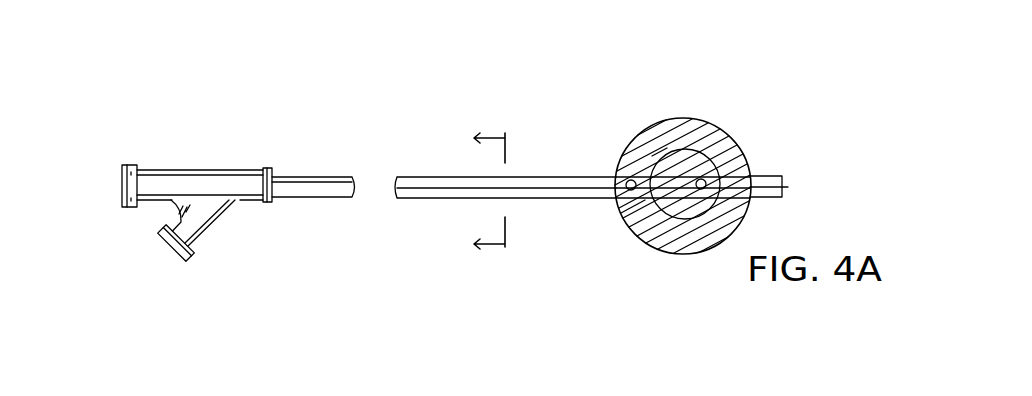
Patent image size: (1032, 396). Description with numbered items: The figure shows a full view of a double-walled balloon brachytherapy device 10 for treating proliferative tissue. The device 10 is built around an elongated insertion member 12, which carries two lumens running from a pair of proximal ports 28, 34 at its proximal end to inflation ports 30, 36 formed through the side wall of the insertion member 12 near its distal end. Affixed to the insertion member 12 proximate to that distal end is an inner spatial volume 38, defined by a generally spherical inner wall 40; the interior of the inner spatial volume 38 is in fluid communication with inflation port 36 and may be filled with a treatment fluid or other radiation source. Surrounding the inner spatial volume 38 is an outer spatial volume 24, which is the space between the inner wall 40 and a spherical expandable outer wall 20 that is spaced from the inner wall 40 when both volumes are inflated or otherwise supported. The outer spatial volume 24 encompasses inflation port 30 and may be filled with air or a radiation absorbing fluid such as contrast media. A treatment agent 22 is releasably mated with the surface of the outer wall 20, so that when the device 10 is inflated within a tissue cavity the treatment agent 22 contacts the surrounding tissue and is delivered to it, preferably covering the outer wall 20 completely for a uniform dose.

The double-walled balloon brachytherapy device 10 is at (407, 86).
The insertion member 12 is at (178, 168).
The proximal port 28 is at (119, 181).
The proximal port 34 is at (167, 252).
The outer wall 20 is at (703, 122).
The treatment agent 22 is at (707, 233).
The outer spatial volume 24 is at (640, 208).
The inflation port 30 is at (628, 178).
The inflation port 36 is at (707, 177).
The inner spatial volume 38 is at (685, 173).
The inner wall 40 is at (660, 155).